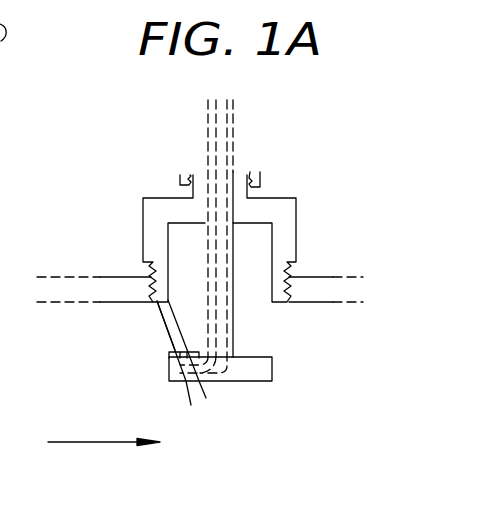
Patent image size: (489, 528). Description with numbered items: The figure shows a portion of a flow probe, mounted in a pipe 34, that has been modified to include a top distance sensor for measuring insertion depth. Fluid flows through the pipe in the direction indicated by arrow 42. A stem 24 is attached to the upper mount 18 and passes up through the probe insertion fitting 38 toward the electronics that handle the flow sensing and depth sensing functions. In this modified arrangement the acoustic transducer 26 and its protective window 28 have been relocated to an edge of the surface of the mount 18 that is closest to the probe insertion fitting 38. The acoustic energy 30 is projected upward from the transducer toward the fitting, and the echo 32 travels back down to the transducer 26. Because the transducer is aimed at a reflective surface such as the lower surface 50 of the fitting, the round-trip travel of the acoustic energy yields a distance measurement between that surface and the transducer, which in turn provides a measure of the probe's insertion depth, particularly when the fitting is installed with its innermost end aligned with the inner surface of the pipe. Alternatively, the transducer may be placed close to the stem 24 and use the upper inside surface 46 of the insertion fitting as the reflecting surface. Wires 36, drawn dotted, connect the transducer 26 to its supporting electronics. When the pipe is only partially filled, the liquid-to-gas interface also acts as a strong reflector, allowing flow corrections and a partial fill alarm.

The upper mount 18 is at (272, 363).
The stem 24 is at (233, 142).
The acoustic transducer 26 is at (191, 405).
The protective window 28 is at (206, 398).
The acoustic energy 30 is at (166, 332).
The echo 32 is at (181, 318).
The pipe 34 is at (127, 277).
The wires 36 is at (227, 290).
The probe insertion fitting 38 is at (163, 198).
The arrow indicating fluid flow direction 42 is at (82, 441).
The upper inside surface of the insertion fitting 46 is at (252, 222).
The lower surface of the fitting 50 is at (275, 302).